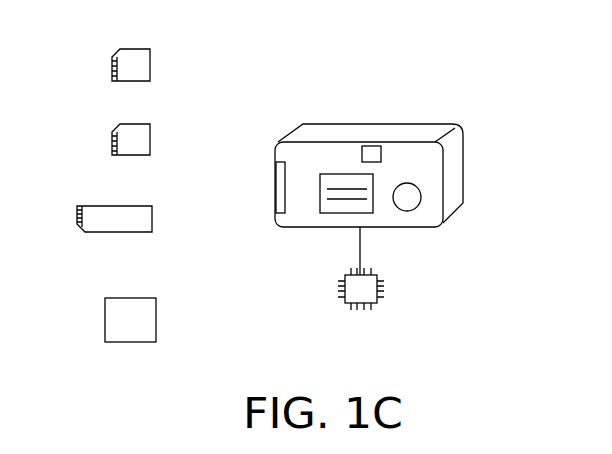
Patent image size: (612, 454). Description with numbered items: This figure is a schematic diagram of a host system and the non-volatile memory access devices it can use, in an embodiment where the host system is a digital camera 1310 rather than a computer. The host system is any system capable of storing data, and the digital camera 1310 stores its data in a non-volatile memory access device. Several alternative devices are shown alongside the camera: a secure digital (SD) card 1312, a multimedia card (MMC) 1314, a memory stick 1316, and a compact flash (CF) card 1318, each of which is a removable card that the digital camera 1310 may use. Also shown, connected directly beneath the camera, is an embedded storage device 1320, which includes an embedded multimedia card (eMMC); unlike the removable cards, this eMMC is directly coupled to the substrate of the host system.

The digital camera 1310 is at (463, 162).
The secure digital (SD) card 1312 is at (150, 57).
The multimedia card (MMC) 1314 is at (150, 132).
The memory stick 1316 is at (152, 221).
The compact flash (CF) card 1318 is at (156, 313).
The embedded storage device 1320 is at (384, 292).